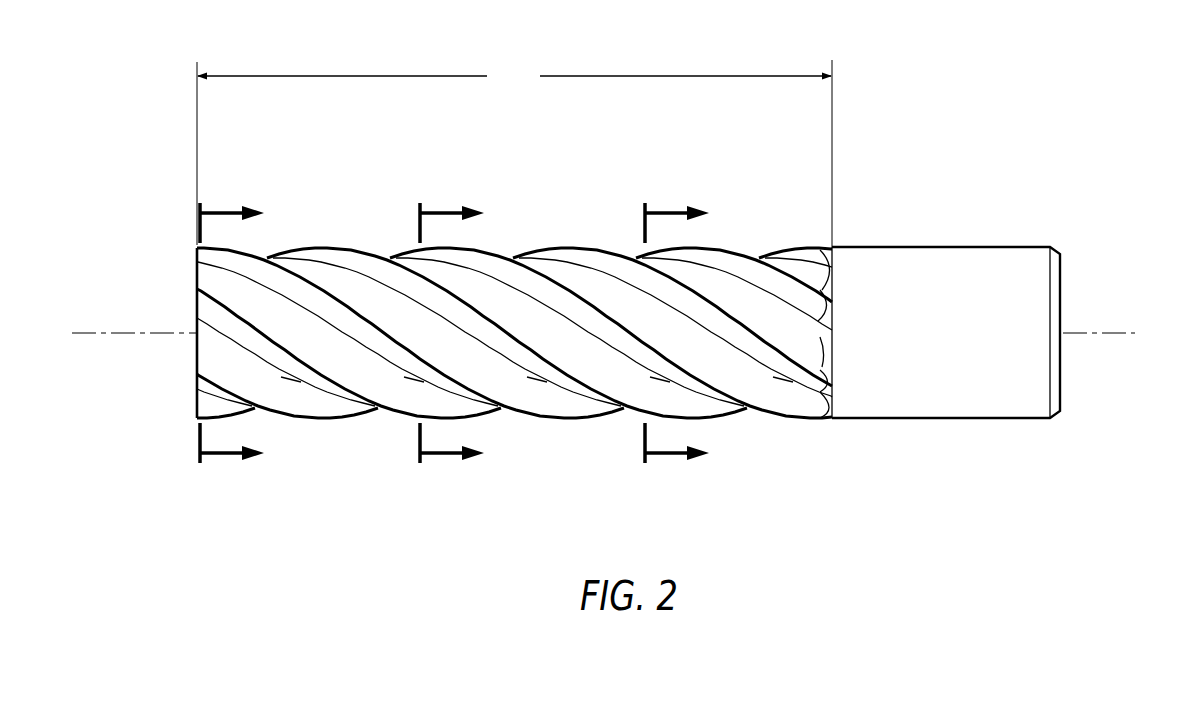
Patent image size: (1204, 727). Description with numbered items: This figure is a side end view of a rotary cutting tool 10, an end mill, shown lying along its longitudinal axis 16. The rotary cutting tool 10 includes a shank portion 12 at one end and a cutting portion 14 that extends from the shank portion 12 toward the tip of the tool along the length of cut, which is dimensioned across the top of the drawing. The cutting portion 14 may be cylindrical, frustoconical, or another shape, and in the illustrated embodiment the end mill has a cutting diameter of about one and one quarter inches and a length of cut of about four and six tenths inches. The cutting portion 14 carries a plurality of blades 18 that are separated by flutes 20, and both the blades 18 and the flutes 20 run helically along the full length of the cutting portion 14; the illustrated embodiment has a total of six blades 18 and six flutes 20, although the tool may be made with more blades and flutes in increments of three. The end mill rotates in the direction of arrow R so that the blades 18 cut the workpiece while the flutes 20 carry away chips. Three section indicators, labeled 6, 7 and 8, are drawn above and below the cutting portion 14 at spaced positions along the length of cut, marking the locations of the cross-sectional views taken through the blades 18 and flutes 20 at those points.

The rotary cutting tool 10 is at (1003, 79).
The shank portion 12 is at (940, 200).
The cutting portion 14 is at (341, 158).
The longitudinal axis 16 is at (1108, 333).
The blades 18 is at (192, 253).
The flutes 20 is at (194, 277).
The section line 6 is at (232, 334).
The section line 7 is at (452, 334).
The section line 8 is at (677, 334).